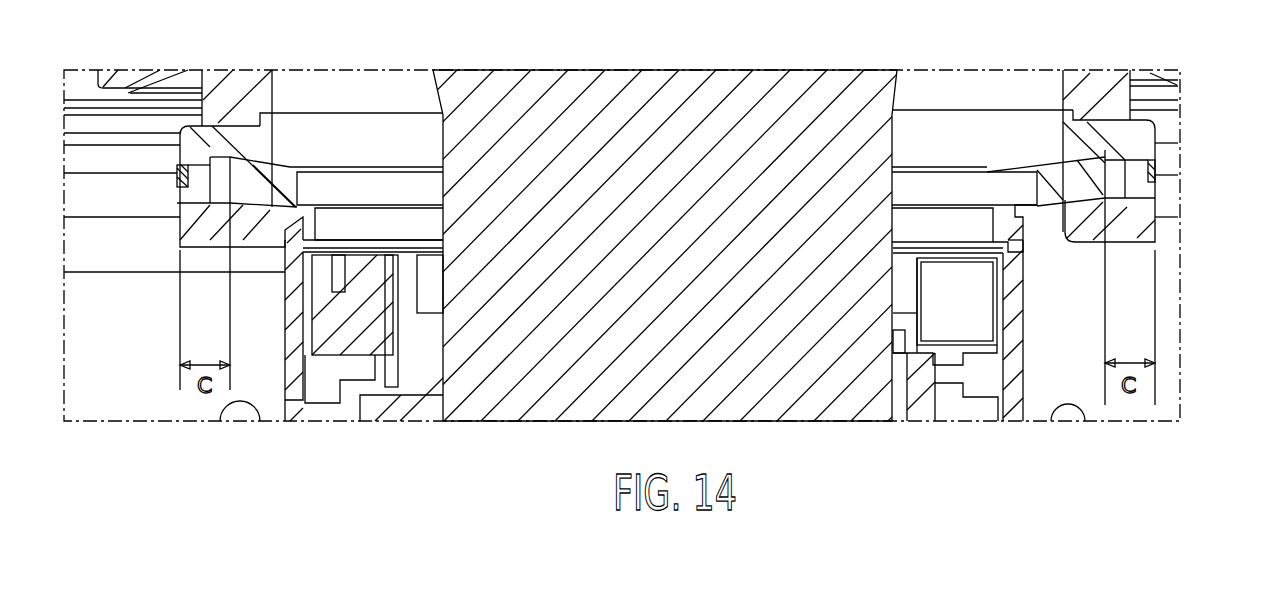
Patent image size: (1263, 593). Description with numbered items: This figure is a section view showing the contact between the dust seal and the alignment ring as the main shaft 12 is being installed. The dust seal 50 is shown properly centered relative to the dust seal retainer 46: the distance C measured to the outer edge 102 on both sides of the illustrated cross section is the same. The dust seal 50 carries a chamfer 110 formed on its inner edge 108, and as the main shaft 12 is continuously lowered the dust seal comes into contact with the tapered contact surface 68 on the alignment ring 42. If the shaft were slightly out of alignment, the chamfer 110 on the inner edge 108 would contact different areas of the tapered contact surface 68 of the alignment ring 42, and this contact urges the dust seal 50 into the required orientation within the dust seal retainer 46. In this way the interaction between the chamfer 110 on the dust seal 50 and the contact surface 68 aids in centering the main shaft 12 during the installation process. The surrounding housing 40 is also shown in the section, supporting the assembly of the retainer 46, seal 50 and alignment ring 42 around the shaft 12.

The main shaft 12 is at (792, 88).
The housing 40 is at (1013, 293).
The alignment ring 42 is at (363, 223).
The dust seal retainer 46 is at (1132, 223).
The dust seal 50 is at (285, 183).
The tapered contact surface 68 is at (270, 224).
The outer edge 102 is at (200, 182).
The inner edge 108 is at (312, 188).
The chamfer 110 is at (1017, 207).